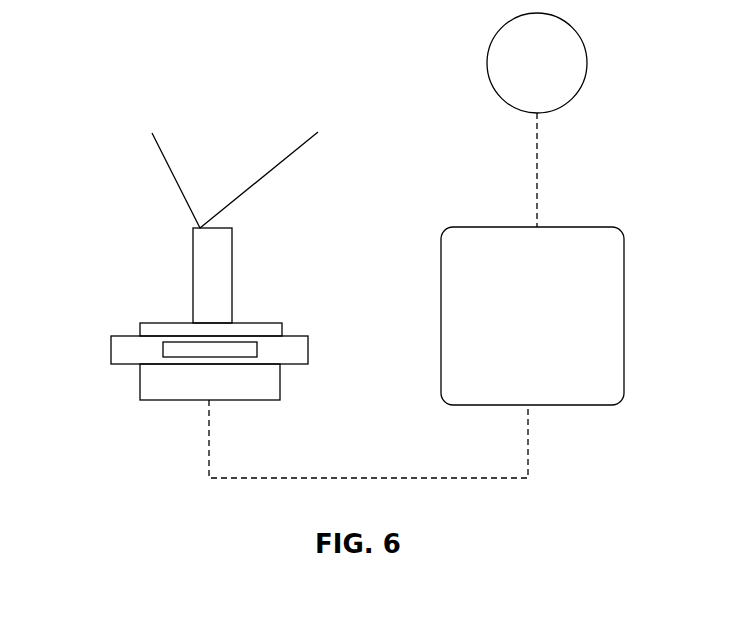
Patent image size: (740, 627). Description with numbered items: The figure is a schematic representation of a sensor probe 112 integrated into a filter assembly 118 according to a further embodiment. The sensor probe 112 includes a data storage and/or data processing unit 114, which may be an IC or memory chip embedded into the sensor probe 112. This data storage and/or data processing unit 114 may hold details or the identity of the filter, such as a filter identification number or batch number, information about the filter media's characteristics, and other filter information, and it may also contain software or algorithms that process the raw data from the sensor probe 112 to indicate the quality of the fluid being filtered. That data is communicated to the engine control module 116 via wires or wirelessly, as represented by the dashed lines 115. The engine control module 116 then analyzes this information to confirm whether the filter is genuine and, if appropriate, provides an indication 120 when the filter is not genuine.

The sensor probe 112 is at (237, 269).
The data storage and/or data processing unit 114 is at (160, 347).
The dashed lines 115 is at (340, 472).
The engine control module (ECM) 116 is at (551, 330).
The filter assembly 118 is at (257, 145).
The indication 120 is at (557, 78).